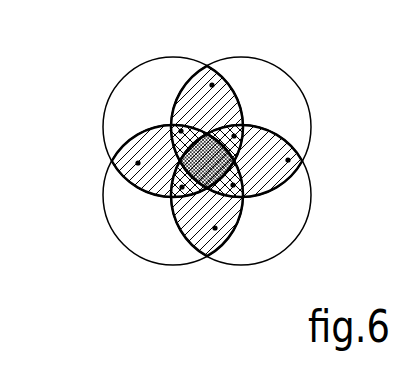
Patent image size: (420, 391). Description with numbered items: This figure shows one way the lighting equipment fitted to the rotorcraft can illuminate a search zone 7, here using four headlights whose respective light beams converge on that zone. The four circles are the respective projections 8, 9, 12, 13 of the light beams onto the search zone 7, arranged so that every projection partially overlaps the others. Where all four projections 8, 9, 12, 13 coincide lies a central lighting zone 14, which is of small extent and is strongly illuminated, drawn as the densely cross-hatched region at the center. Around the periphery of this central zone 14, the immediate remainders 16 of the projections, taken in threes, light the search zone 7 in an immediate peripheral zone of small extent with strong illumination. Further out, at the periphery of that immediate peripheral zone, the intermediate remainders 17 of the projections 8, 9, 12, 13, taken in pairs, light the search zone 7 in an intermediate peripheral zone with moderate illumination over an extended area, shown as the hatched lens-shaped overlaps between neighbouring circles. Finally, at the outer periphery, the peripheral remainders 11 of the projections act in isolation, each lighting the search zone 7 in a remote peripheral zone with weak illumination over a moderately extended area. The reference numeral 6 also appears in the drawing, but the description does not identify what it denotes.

The overlap region boundary 6 is at (172, 117).
The search zone 7 is at (166, 287).
The projection of light beam 8 is at (108, 97).
The projection of light beam 9 is at (293, 80).
The peripheral remainders 11 is at (146, 118).
The projection of light beam 12 is at (300, 232).
The projection of light beam 13 is at (110, 226).
The central lighting zone 14 is at (230, 101).
The immediate remainders 16 is at (256, 127).
The intermediate remainders 17 is at (212, 85).